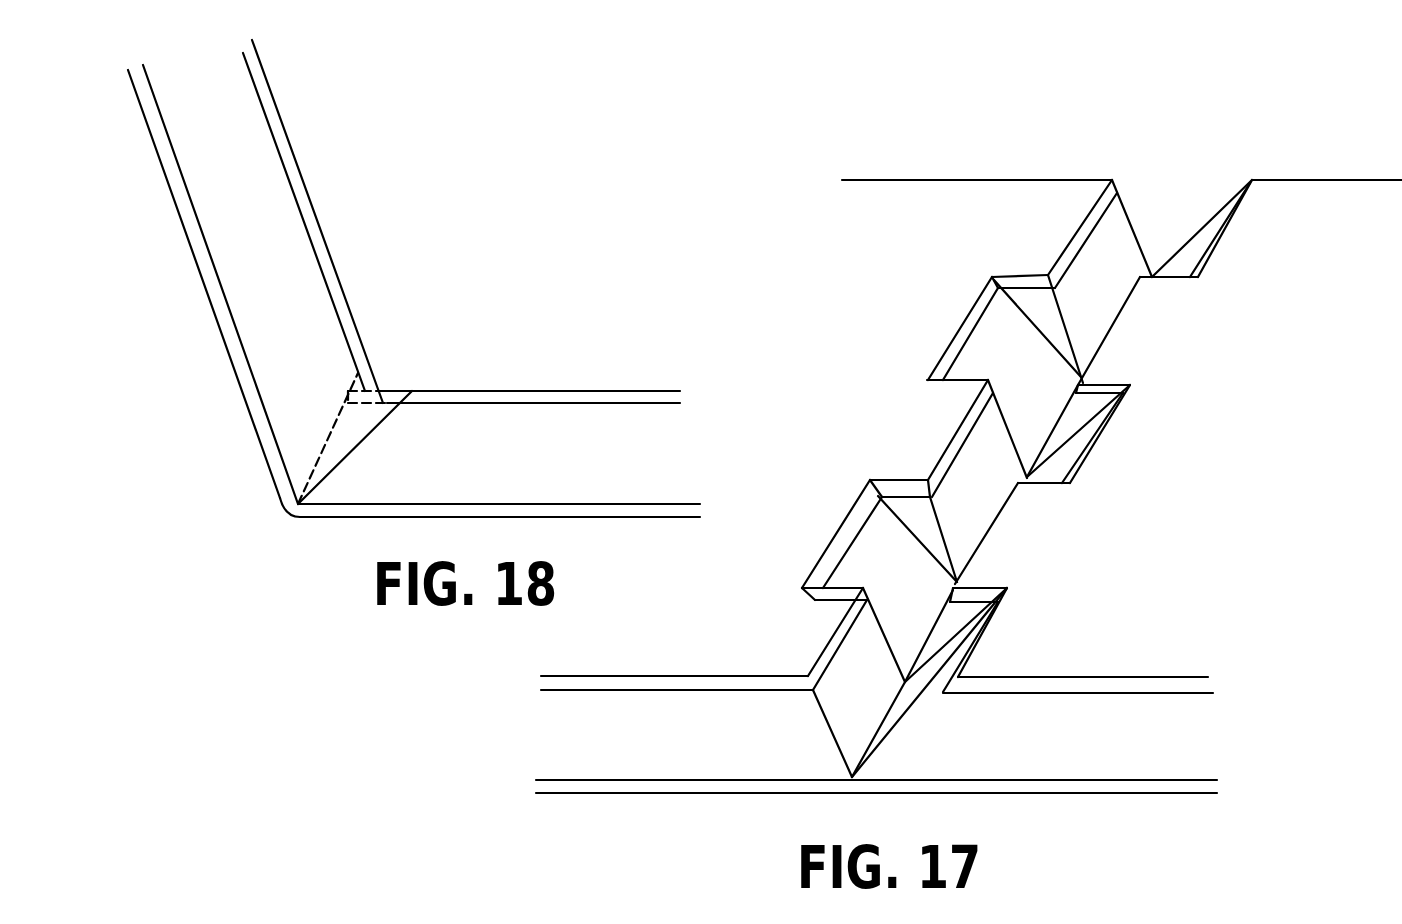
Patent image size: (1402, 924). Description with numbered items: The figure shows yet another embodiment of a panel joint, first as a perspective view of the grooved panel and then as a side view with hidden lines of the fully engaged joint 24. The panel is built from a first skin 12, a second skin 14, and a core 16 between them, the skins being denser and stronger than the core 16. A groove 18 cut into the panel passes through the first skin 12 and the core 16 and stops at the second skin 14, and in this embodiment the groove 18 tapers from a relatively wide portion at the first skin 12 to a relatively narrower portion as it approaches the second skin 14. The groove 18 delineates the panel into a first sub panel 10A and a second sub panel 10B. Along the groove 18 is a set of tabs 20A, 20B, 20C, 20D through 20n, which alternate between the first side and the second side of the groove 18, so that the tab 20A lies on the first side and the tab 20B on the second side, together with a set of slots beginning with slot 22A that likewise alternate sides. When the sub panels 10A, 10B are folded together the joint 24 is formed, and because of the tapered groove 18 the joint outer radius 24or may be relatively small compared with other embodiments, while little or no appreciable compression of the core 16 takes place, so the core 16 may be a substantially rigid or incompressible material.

In FIG. 18, the first sub panel 10A is at (280, 245).
In FIG. 18, the second sub panel 10B is at (545, 472).
In FIG. 18, the joint 24 is at (395, 375).
In FIG. 18, the joint outer radius 24or is at (281, 520).
In FIG. 17, the first skin 12 is at (575, 682).
In FIG. 17, the second skin 14 is at (683, 785).
In FIG. 17, the core 16 is at (668, 745).
In FIG. 17, the groove 18 is at (1172, 199).
In FIG. 17, the tab 20A is at (808, 638).
In FIG. 17, the tab 20B is at (1010, 542).
In FIG. 17, the tab 20C is at (905, 432).
In FIG. 17, the tab 20D is at (1142, 330).
In FIG. 17, the tab 20n is at (1023, 232).
In FIG. 17, the slot 22A is at (932, 672).